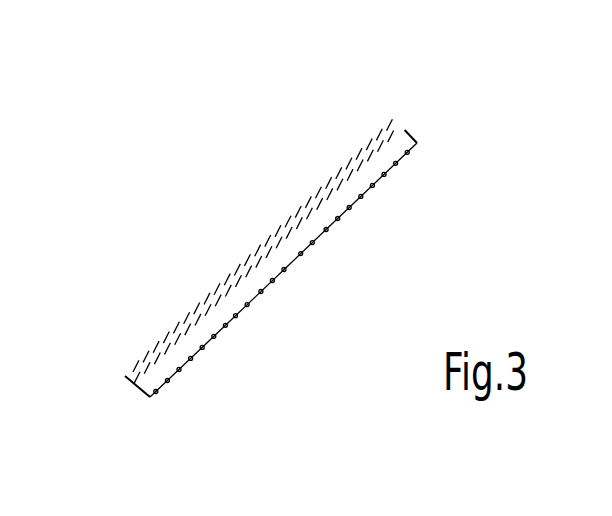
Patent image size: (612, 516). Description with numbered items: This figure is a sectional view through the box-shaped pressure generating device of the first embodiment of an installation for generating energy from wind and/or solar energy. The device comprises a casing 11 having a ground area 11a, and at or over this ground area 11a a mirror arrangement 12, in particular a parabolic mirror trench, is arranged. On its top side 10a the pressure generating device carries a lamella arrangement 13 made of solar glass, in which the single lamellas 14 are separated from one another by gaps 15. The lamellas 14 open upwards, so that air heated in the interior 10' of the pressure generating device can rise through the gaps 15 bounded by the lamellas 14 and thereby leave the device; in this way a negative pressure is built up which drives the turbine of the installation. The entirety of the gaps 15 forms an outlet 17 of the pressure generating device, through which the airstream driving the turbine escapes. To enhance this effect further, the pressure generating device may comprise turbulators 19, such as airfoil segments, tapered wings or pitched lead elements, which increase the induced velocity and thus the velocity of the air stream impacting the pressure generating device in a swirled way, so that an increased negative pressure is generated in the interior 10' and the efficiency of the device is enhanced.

The top side 10a is at (388, 118).
The interior 10' is at (279, 341).
The casing 11 is at (405, 129).
The ground area 11a is at (292, 262).
The mirror arrangement 12 is at (347, 210).
The lamella arrangement 13 is at (193, 321).
The lamella 14 is at (232, 283).
The gap 15 is at (240, 281).
The outlet 17 is at (322, 184).
The turbulator 19 is at (125, 377).